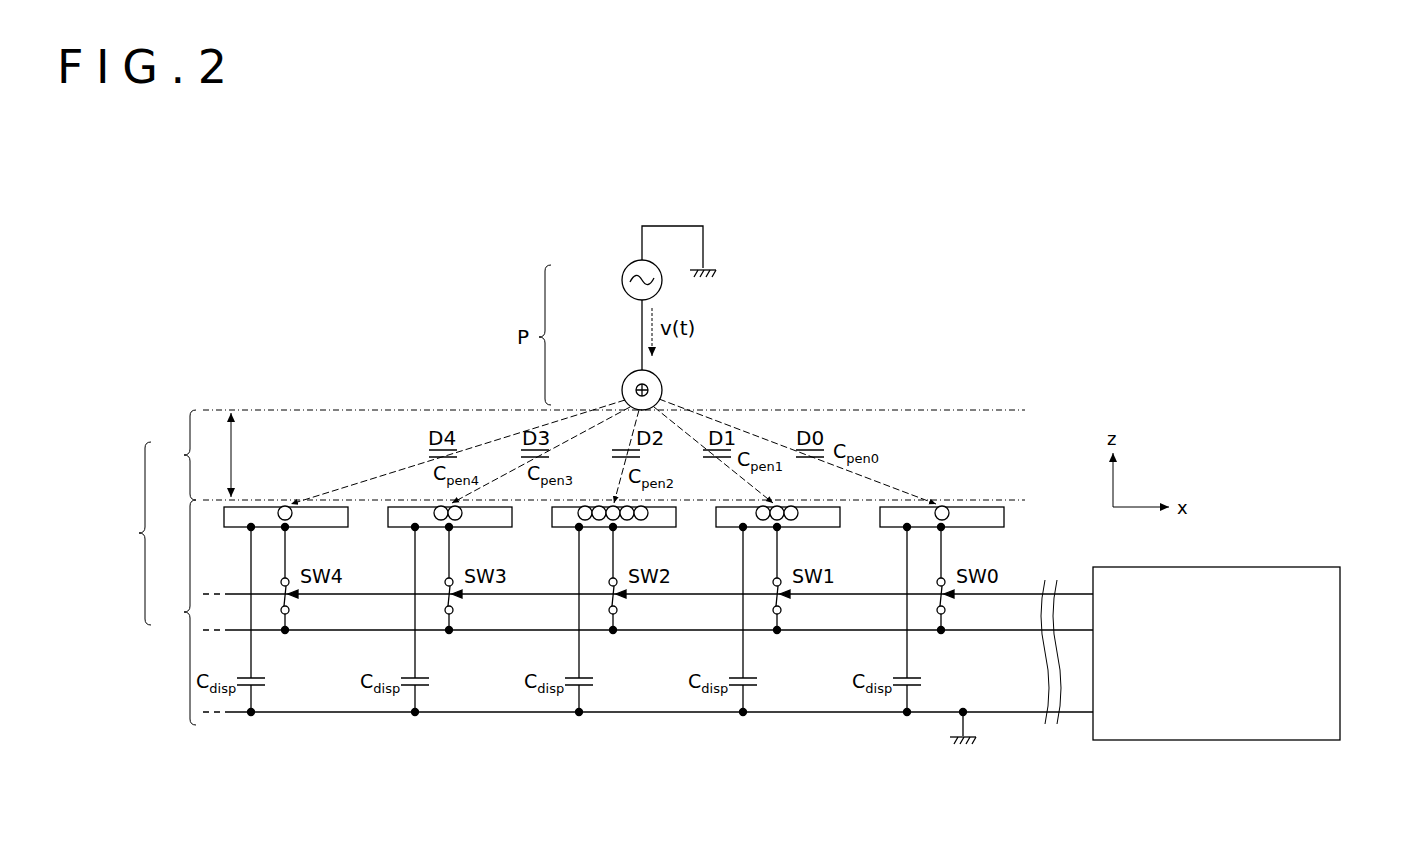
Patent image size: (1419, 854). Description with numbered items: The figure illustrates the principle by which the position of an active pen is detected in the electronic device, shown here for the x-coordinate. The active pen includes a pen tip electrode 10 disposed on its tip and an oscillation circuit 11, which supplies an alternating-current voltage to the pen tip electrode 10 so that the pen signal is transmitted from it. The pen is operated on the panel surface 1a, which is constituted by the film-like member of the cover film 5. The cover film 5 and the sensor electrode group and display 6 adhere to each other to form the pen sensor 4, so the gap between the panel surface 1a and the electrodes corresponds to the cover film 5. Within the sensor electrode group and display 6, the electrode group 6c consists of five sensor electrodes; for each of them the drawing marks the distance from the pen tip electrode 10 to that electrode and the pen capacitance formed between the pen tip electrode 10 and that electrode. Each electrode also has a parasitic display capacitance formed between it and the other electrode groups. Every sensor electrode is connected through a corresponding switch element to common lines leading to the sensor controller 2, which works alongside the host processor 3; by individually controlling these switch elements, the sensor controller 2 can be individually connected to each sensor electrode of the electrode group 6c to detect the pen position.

The panel surface 1a is at (957, 409).
The sensor controller 2 is at (1340, 648).
The host processor 3 is at (1248, 653).
The pen sensor 4 is at (132, 533).
The cover film 5 is at (206, 455).
The sensor electrode group and display 6 is at (175, 612).
The electrode group 6c is at (1006, 520).
The pen tip electrode 10 is at (620, 396).
The oscillation circuit 11 is at (620, 281).